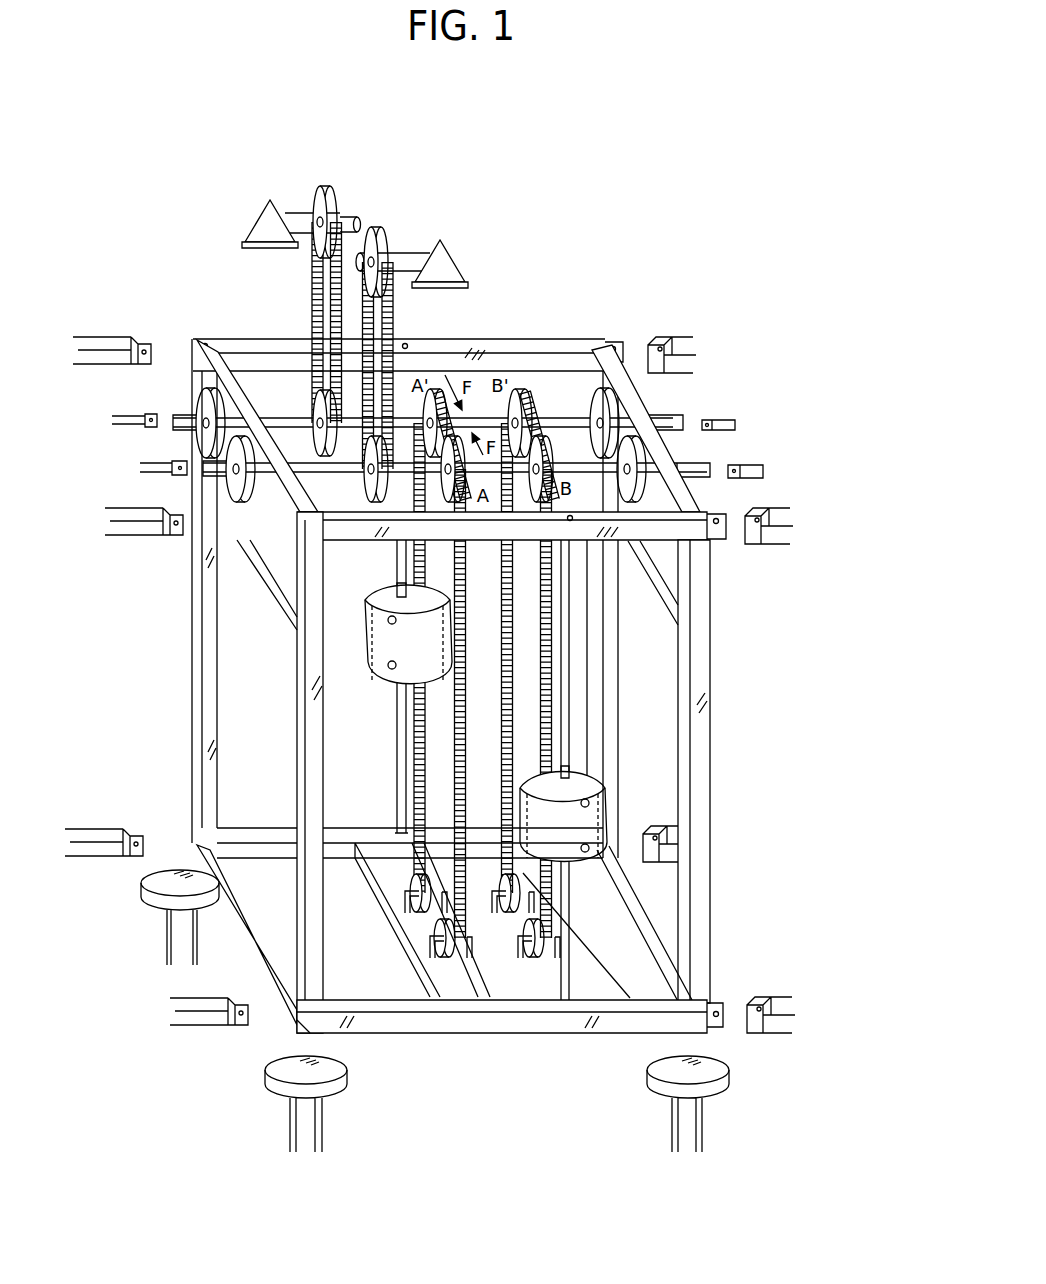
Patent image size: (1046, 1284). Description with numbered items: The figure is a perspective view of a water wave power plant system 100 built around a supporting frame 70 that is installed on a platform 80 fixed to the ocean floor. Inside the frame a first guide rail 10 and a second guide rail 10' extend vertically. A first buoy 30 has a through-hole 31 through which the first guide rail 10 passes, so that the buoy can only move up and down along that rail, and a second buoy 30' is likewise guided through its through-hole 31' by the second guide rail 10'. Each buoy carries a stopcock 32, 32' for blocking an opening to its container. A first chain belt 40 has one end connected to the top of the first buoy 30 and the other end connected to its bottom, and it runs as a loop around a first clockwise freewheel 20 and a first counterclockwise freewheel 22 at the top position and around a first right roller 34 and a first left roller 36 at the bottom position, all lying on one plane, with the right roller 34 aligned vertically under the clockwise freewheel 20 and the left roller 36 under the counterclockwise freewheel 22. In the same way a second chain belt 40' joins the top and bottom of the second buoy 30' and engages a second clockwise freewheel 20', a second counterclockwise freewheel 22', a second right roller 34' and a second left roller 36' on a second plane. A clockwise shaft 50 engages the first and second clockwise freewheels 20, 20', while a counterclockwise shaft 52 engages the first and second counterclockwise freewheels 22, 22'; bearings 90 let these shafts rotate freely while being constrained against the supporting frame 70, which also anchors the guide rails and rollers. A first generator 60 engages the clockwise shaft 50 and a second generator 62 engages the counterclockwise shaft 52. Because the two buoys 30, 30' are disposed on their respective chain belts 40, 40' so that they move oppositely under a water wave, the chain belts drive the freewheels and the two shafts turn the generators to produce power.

The water wave power plant system 100 is at (607, 166).
The first guide rail 10 is at (278, 686).
The second guide rail 10' is at (669, 774).
The first clockwise freewheel 20 is at (484, 378).
The second clockwise freewheel 20' is at (564, 369).
The first counterclockwise freewheel 22 is at (462, 342).
The second counterclockwise freewheel 22' is at (533, 370).
The first buoy 30 is at (300, 634).
The second buoy 30' is at (644, 817).
The through-hole 31 is at (277, 577).
The through-hole 31' is at (664, 751).
The stopcock 32 is at (272, 660).
The stopcock 32' is at (674, 834).
The first right roller 34 is at (444, 1016).
The second right roller 34' is at (536, 1016).
The first left roller 36 is at (410, 982).
The second left roller 36' is at (496, 971).
The first chain belt 40 is at (309, 664).
The second chain belt 40' is at (642, 664).
The clockwise shaft 50 is at (690, 467).
The counterclockwise shaft 52 is at (662, 418).
The first generator 60 is at (440, 239).
The second generator 62 is at (270, 199).
The supporting frame 70 is at (709, 695).
The platform 80 is at (150, 894).
The bearings 90 is at (220, 450).